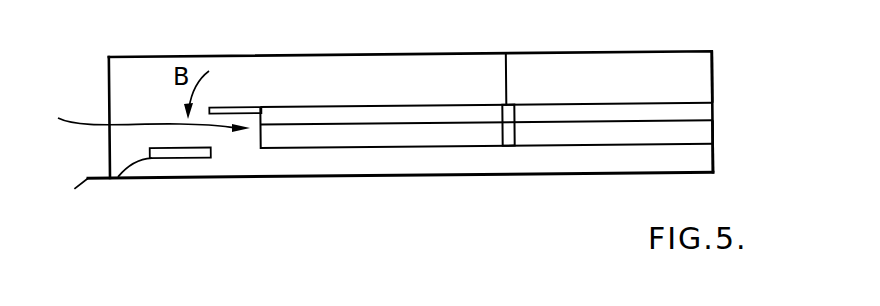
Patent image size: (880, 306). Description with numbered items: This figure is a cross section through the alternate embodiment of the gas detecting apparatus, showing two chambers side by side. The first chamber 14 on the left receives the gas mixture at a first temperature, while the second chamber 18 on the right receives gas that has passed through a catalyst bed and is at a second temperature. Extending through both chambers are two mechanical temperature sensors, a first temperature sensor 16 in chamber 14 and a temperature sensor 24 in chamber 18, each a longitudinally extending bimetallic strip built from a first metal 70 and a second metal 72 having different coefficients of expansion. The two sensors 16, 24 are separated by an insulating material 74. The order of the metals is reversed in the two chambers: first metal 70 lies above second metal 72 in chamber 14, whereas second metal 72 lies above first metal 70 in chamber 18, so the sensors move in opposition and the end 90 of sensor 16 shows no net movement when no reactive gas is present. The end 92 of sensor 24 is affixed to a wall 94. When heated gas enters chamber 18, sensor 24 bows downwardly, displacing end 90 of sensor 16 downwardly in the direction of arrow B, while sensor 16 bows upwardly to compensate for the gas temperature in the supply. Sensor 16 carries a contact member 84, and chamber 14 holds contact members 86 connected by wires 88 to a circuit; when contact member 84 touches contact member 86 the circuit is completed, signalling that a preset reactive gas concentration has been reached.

The chamber 14 is at (149, 90).
The first temperature sensor 16 is at (372, 92).
The second chamber 18 is at (646, 88).
The temperature sensor 24 is at (576, 76).
The first metal 70 is at (312, 112).
The second metal 72 is at (345, 148).
The insulating material 74 is at (510, 106).
The contact member 84 is at (238, 107).
The contact member 86 is at (171, 158).
The wire 88 is at (88, 182).
The end 90 is at (136, 117).
The end 92 is at (712, 97).
The wall 94 is at (714, 158).